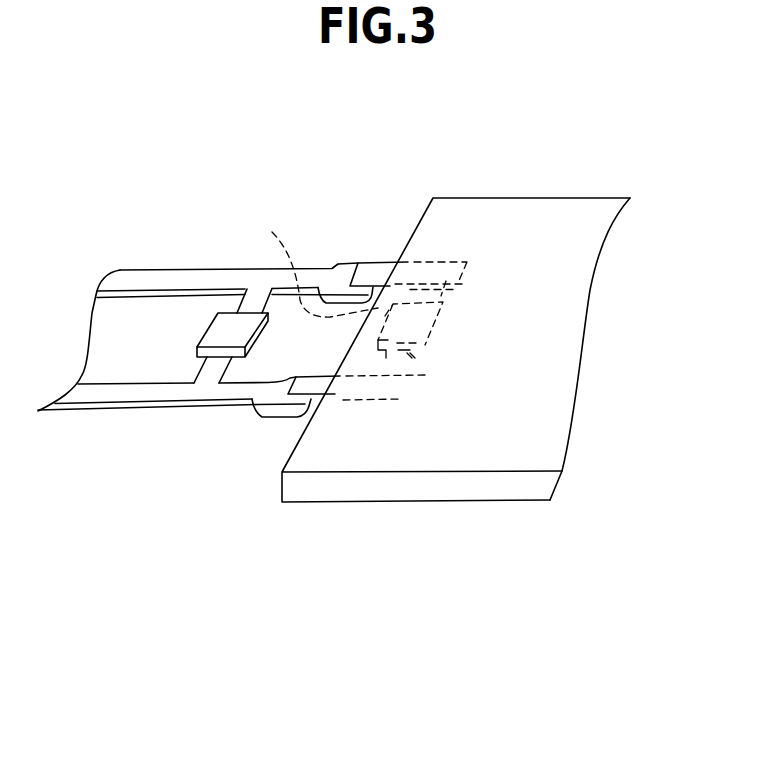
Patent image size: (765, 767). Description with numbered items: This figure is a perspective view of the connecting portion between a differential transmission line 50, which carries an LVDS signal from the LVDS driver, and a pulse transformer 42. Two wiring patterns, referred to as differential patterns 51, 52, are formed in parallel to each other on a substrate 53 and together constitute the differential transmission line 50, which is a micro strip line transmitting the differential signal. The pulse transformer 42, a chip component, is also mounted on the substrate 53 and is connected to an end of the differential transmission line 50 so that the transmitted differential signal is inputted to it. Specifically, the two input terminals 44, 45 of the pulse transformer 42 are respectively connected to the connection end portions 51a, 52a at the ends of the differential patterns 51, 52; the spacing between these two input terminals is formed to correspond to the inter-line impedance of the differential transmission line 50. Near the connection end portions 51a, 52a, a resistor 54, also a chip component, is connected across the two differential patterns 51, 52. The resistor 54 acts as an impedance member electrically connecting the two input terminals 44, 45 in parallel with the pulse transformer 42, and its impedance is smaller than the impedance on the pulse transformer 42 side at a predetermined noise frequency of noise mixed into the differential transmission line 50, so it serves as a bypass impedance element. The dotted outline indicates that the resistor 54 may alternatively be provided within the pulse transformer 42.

The pulse transformer 42 is at (515, 210).
The input terminal 44 is at (377, 267).
The input terminal 45 is at (330, 392).
The differential transmission line 50 is at (120, 212).
The differential pattern 51 is at (182, 277).
The connection end portion 51a is at (342, 278).
The differential pattern 52 is at (118, 396).
The connection end portion 52a is at (270, 393).
The substrate 53 is at (177, 489).
The resistor 54 is at (238, 328).